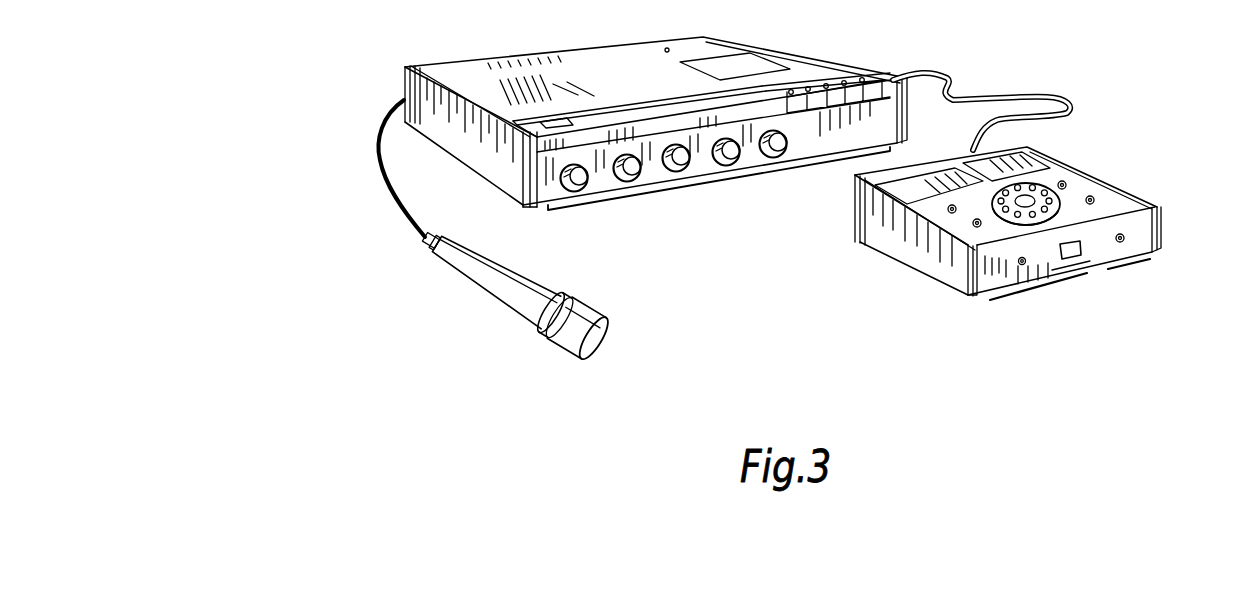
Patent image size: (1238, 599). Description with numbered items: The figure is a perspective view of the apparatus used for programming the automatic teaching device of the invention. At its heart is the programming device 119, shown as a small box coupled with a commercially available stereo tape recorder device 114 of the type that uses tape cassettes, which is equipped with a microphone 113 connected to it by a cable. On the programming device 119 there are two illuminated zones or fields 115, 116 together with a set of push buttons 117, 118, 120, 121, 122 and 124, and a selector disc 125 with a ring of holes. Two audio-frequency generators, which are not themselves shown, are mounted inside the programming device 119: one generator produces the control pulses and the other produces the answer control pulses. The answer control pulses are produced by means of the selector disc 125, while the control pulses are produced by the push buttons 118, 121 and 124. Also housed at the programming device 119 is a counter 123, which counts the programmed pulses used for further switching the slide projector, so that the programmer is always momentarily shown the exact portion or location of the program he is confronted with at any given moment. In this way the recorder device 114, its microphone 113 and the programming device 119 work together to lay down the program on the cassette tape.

The microphone 113 is at (517, 307).
The stereo tape recorder device 114 is at (605, 80).
The illuminated zone or field 115 is at (928, 190).
The illuminated zone or field 116 is at (1020, 162).
The push button 117 is at (948, 211).
The push button 118 is at (973, 225).
The programming device 119 is at (1064, 267).
The push button 120 is at (1066, 184).
The push button 121 is at (1094, 198).
The push button 122 is at (1020, 263).
The counter 123 is at (1083, 257).
The push button 124 is at (1124, 237).
The selector disc 125 is at (1030, 205).